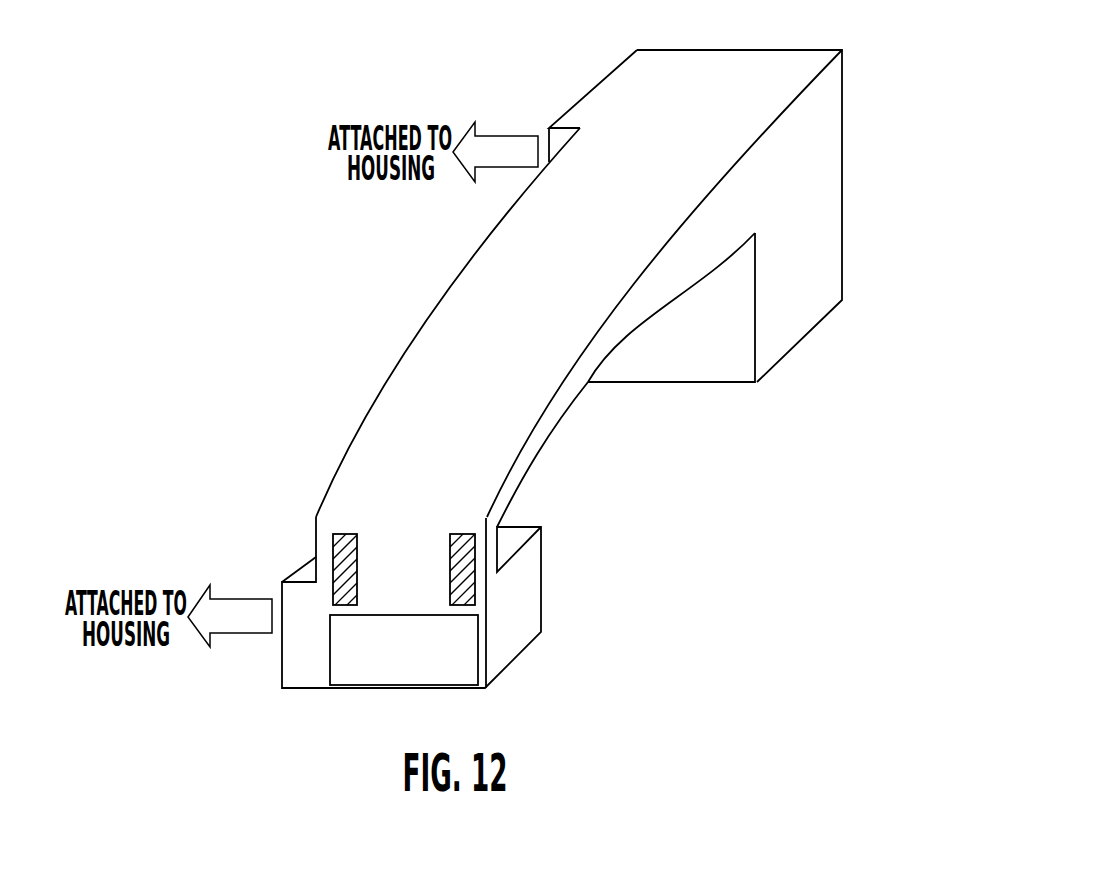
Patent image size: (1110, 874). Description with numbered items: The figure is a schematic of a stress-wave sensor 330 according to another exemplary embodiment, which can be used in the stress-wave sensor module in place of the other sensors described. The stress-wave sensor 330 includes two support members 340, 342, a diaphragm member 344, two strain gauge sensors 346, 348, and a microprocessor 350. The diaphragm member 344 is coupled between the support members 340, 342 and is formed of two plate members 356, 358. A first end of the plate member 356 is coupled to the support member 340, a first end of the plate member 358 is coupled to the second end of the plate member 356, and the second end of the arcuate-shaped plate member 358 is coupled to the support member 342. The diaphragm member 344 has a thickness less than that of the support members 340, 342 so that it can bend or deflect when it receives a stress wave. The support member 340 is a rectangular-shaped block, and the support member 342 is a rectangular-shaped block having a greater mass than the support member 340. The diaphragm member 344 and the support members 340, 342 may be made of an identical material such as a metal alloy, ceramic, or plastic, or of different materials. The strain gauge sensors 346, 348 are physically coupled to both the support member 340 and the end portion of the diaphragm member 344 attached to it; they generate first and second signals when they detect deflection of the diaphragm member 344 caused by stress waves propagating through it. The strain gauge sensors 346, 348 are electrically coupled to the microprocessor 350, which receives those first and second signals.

The stress-wave sensor 330 is at (587, 367).
The support member 340 is at (417, 601).
The support member 342 is at (788, 240).
The diaphragm member 344 is at (588, 288).
The strain gauge sensor 346 is at (340, 575).
The strain gauge sensor 348 is at (463, 577).
The microprocessor 350 is at (437, 653).
The plate member 356 is at (316, 537).
The plate member 358 is at (365, 408).